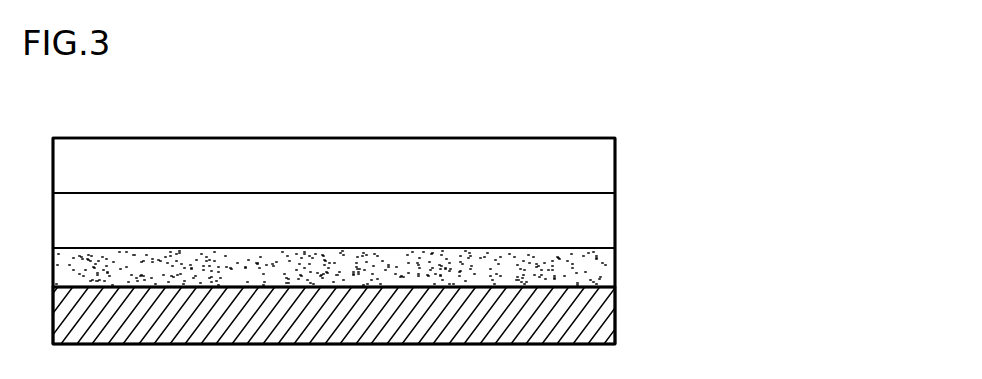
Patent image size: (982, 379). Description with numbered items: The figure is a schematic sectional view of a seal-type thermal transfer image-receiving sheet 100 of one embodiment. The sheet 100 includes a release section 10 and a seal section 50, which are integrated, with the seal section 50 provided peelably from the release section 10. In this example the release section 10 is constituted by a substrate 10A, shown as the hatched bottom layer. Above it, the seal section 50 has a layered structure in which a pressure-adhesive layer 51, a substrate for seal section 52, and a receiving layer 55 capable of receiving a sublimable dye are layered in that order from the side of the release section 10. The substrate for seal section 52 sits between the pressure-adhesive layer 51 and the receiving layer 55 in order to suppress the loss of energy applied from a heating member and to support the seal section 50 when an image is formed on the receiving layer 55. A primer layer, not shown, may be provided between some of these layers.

The seal-type thermal transfer image-receiving sheet 100 is at (555, 128).
The seal section 50 is at (745, 133).
The receiving layer 55 is at (565, 180).
The substrate for seal section 52 is at (572, 230).
The pressure-adhesive layer 51 is at (570, 278).
The substrate 10A is at (423, 315).
The release section 10 is at (580, 323).